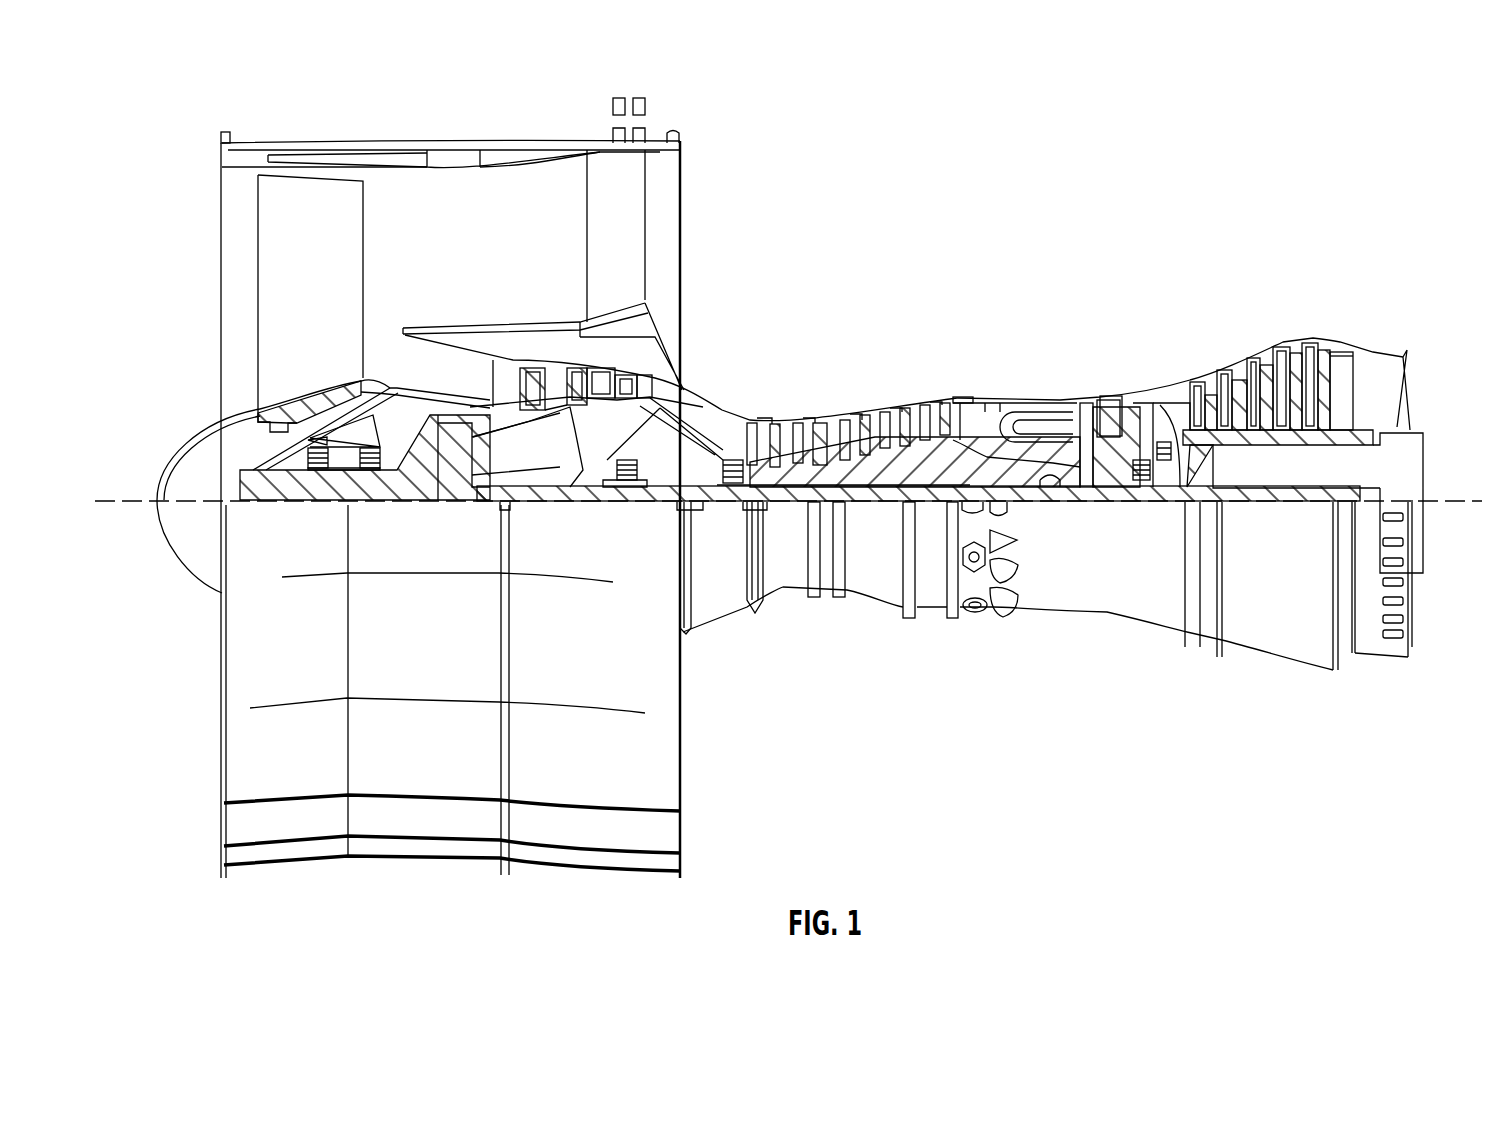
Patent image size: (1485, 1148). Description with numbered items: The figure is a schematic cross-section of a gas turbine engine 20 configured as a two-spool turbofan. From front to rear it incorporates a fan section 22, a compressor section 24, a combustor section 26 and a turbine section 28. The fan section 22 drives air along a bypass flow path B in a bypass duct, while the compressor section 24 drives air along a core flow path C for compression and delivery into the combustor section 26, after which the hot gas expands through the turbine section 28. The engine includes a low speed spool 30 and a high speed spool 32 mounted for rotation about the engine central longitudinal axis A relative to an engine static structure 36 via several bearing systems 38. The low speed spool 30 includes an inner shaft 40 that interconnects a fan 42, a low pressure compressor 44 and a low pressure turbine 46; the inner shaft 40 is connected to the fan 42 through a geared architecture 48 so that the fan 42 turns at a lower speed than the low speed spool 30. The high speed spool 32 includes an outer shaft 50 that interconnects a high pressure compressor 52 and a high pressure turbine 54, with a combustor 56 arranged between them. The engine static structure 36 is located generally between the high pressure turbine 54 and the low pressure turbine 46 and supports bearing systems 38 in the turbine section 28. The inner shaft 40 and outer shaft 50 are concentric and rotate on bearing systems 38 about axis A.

The gas turbine engine 20 is at (1298, 148).
The fan section 22 is at (274, 146).
The compressor section 24 is at (781, 250).
The combustor section 26 is at (970, 250).
The turbine section 28 is at (1186, 286).
The low speed spool 30 is at (885, 503).
The high speed spool 32 is at (908, 455).
The engine static structure 36 is at (932, 604).
The bearing systems 38 is at (312, 478).
The inner shaft 40 is at (700, 505).
The fan 42 is at (292, 278).
The low pressure compressor 44 is at (600, 372).
The low pressure turbine 46 is at (1270, 345).
The geared architecture 48 is at (440, 485).
The outer shaft 50 is at (1045, 484).
The high pressure compressor 52 is at (848, 460).
The high pressure turbine 54 is at (1110, 395).
The combustor 56 is at (1027, 428).